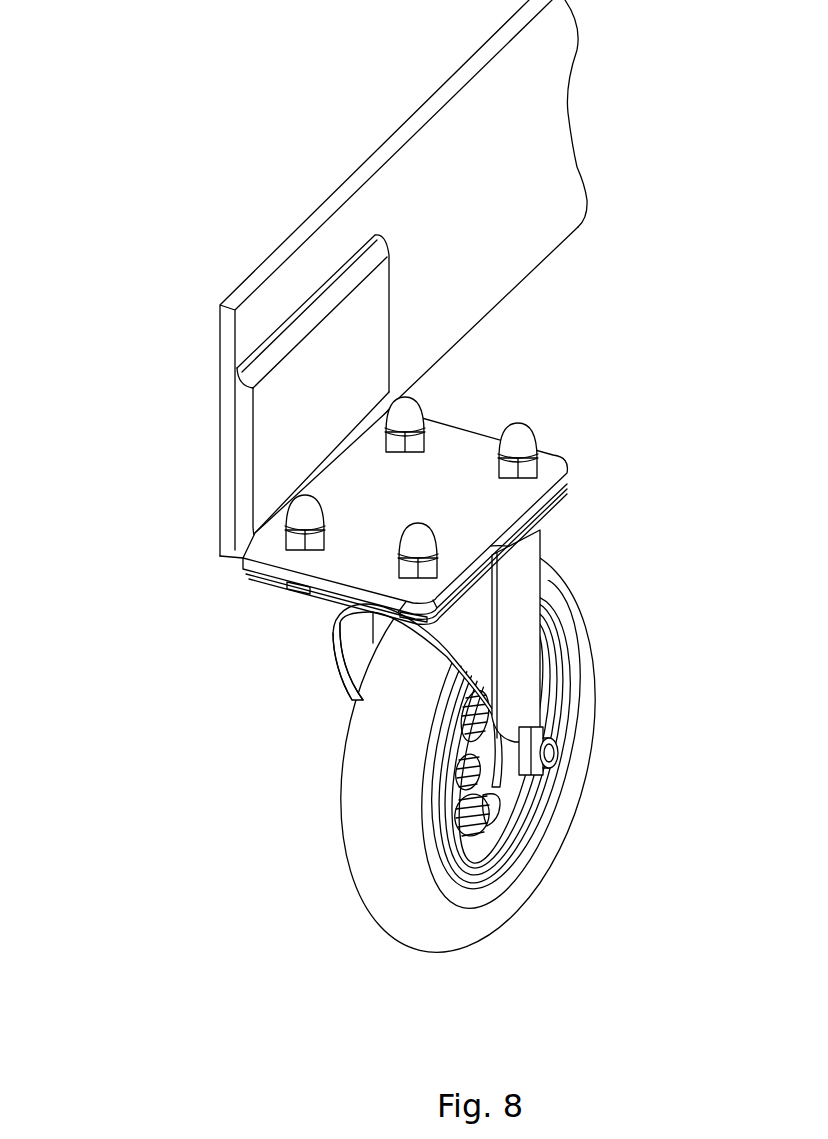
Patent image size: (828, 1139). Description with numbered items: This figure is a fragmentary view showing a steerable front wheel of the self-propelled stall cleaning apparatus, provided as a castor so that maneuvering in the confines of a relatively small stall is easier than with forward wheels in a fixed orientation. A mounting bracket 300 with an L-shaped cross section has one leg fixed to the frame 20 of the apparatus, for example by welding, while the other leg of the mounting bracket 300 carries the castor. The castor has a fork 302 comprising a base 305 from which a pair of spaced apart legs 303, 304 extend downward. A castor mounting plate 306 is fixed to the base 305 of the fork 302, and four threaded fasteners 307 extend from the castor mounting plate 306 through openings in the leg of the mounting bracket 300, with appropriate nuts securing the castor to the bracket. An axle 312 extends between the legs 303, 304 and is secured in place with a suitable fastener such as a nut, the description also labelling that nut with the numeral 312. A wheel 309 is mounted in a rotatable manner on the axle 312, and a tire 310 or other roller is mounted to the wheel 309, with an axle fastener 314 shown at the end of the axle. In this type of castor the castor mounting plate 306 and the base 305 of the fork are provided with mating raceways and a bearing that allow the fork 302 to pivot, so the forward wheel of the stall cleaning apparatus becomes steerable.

The frame 20 is at (532, 168).
The mounting bracket 300 is at (283, 436).
The fork 302 is at (460, 637).
The leg 303 is at (353, 645).
The leg 304 is at (527, 675).
The base 305 is at (390, 620).
The castor mounting plate 306 is at (563, 483).
The threaded fasteners 307 is at (518, 442).
The wheel 309 is at (470, 837).
The wheel 310 is at (367, 822).
The axle 312 is at (553, 760).
The axle nut 314 is at (533, 737).